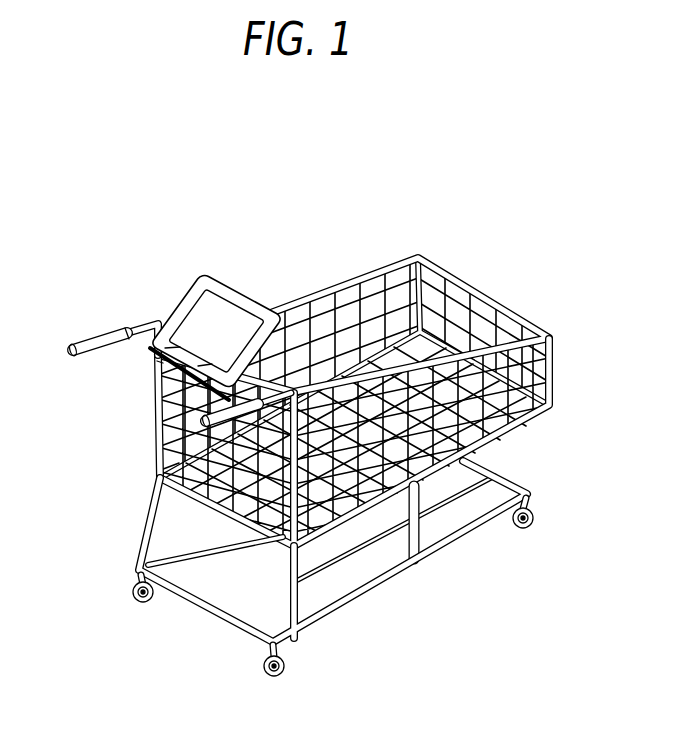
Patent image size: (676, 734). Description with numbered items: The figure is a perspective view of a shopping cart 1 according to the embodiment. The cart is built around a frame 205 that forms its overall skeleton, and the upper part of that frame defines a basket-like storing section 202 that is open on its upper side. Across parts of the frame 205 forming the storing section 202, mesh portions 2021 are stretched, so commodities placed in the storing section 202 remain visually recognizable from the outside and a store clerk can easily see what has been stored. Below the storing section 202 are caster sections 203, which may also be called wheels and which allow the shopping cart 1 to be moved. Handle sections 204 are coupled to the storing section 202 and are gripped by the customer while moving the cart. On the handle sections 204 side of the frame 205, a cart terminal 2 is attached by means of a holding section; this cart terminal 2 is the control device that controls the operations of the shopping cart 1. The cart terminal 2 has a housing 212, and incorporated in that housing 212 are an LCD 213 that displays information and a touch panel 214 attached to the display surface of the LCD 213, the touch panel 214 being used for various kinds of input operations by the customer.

The shopping cart 1 is at (293, 414).
The cart terminal 2 is at (224, 281).
The storing section 202 is at (353, 360).
The mesh portions 2021 is at (357, 292).
The caster sections 203 is at (130, 602).
The handle sections 204 is at (96, 344).
The frame 205 is at (326, 290).
The housing 212 is at (157, 361).
The LCD 213 is at (165, 348).
The touch panel 214 is at (198, 366).